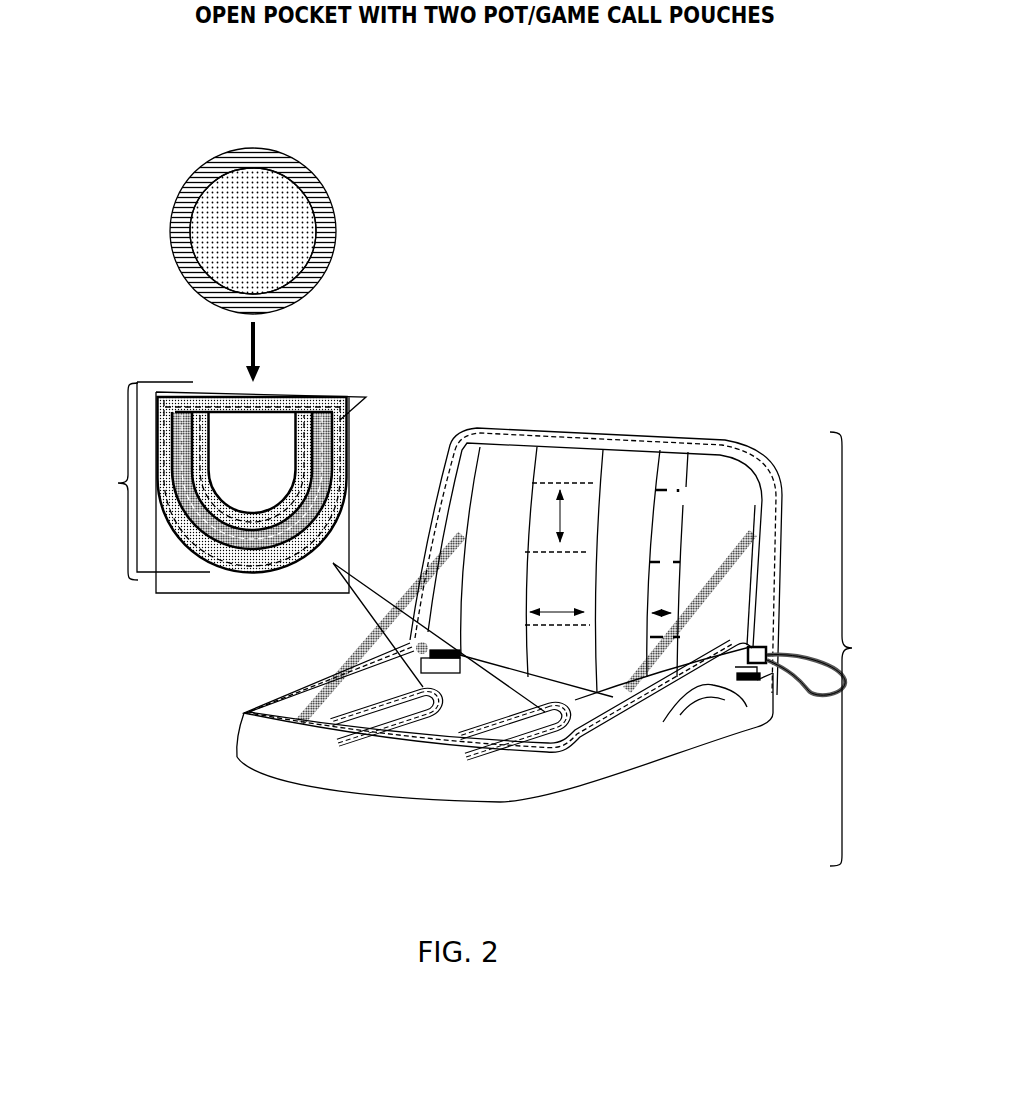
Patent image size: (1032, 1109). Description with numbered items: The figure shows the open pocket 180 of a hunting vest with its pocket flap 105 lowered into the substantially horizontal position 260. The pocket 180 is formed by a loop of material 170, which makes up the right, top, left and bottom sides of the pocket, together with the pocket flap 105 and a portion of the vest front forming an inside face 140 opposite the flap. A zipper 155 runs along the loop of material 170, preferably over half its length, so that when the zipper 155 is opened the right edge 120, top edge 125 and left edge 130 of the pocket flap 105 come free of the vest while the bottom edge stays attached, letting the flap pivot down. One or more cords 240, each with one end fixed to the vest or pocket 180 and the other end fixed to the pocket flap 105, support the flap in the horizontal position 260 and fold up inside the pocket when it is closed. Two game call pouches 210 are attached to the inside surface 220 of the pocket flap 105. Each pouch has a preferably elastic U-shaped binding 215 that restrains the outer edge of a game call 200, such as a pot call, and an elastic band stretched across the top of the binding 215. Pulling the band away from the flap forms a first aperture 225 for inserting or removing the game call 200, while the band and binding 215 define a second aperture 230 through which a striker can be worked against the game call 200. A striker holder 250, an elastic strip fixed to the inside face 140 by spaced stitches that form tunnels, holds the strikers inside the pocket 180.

The pocket flap 105 is at (200, 717).
The right edge 120 is at (282, 698).
The top edge 125 is at (268, 757).
The left edge 130 is at (580, 770).
The inside face 140 is at (697, 518).
The zipper 155 is at (695, 667).
The loop of material 170 is at (503, 800).
The pocket 180 is at (867, 649).
The game call 200 is at (337, 182).
The game call pouch 210 is at (473, 733).
The binding 215 is at (356, 450).
The inside surface 220 is at (198, 380).
The first aperture 225 is at (303, 380).
The second aperture 230 is at (265, 460).
The cord 240 is at (407, 593).
The striker holder 250 is at (568, 505).
The substantially horizontal position 260 is at (637, 752).